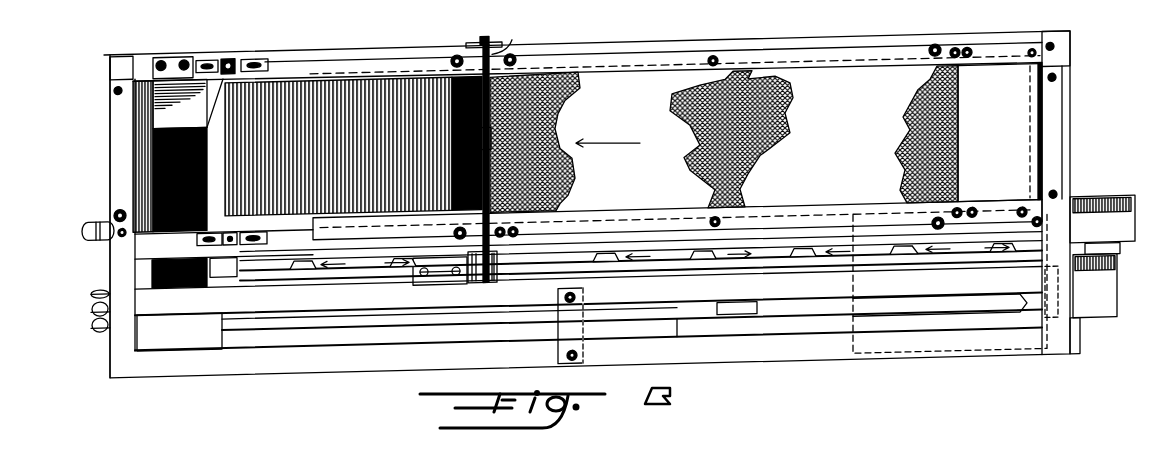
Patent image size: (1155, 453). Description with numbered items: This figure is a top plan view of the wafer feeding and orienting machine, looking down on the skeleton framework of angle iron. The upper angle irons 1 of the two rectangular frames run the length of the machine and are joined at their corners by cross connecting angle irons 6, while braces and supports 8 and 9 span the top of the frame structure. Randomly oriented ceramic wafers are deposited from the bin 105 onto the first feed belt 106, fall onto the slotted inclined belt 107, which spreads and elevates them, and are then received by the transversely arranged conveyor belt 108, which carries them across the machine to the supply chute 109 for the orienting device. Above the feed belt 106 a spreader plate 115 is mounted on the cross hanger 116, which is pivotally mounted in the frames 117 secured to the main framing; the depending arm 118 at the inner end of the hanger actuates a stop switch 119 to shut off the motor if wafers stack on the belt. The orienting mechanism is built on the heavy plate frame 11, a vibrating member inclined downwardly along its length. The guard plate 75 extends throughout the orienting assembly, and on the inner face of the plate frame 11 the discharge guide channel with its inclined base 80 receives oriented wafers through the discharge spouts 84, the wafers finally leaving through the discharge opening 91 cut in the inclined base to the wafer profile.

The upper angle iron 1 is at (782, 44).
The cross connecting angle iron 6 is at (118, 341).
The brace 8 is at (142, 248).
The support 9 is at (330, 314).
The plate frame 11 is at (240, 285).
The guard plate 75 is at (962, 328).
The inclined base 80 is at (670, 283).
The discharge spout 84 is at (347, 288).
The discharge opening 91 is at (1116, 289).
The bin 105 is at (1008, 158).
The first feed belt 106 is at (852, 163).
The inclined belt 107 is at (370, 88).
The transversely arranged conveyor belt 108 is at (150, 163).
The supply chute 109 is at (192, 348).
The spreader plate 115 is at (560, 178).
The cross hanger 116 is at (512, 50).
The frames 117 is at (468, 47).
The depending arm 118 is at (490, 294).
The stop switch 119 is at (465, 277).